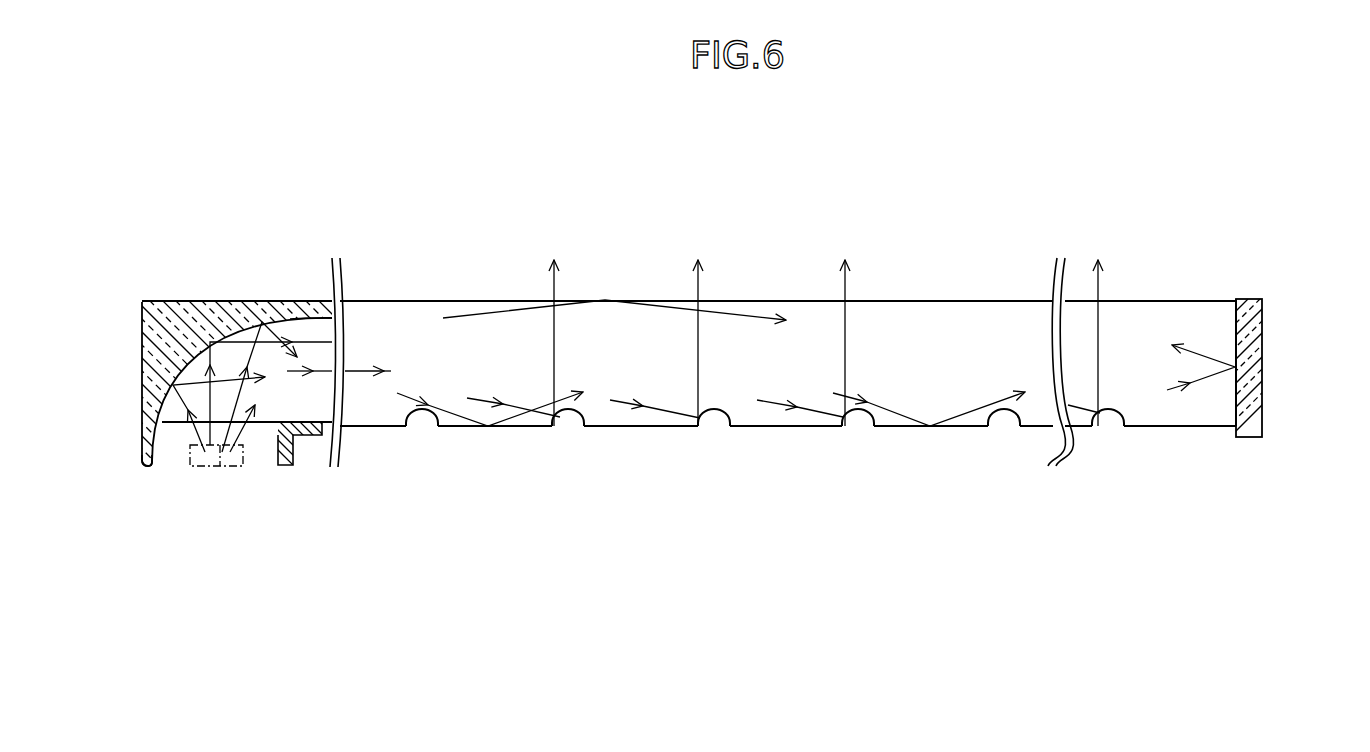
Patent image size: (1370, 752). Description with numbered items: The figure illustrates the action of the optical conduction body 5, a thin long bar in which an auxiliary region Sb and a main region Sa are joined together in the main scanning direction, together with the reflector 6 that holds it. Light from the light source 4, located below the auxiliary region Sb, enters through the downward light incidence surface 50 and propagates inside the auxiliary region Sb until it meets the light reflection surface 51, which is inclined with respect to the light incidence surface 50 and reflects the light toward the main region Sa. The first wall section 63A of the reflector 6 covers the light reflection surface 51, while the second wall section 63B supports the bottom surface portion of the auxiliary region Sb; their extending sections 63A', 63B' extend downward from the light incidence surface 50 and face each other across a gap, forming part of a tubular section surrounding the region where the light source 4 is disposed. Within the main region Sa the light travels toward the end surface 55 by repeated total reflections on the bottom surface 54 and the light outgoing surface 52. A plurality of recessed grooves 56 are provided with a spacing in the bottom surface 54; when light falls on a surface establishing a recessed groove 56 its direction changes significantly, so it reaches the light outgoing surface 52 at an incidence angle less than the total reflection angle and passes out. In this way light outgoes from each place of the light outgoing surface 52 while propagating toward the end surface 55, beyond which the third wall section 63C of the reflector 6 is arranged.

The light source 4 is at (220, 468).
The optical conduction body 5 is at (1150, 297).
The reflector 6 is at (140, 319).
The light incidence surface 50 is at (173, 423).
The light reflection surface 51 is at (170, 328).
The light outgoing surface 52 is at (657, 298).
The bottom surface 54 is at (642, 428).
The end surface 55 is at (1240, 383).
The recessed grooves 56 is at (422, 418).
The first wall section 63A is at (242, 347).
The extending section of first wall section 63A' is at (118, 486).
The second wall section 63B is at (309, 469).
The extending section of second wall section 63B' is at (281, 485).
The third wall section 63C is at (1253, 345).
The main region Sa is at (777, 295).
The auxiliary region Sb is at (308, 315).